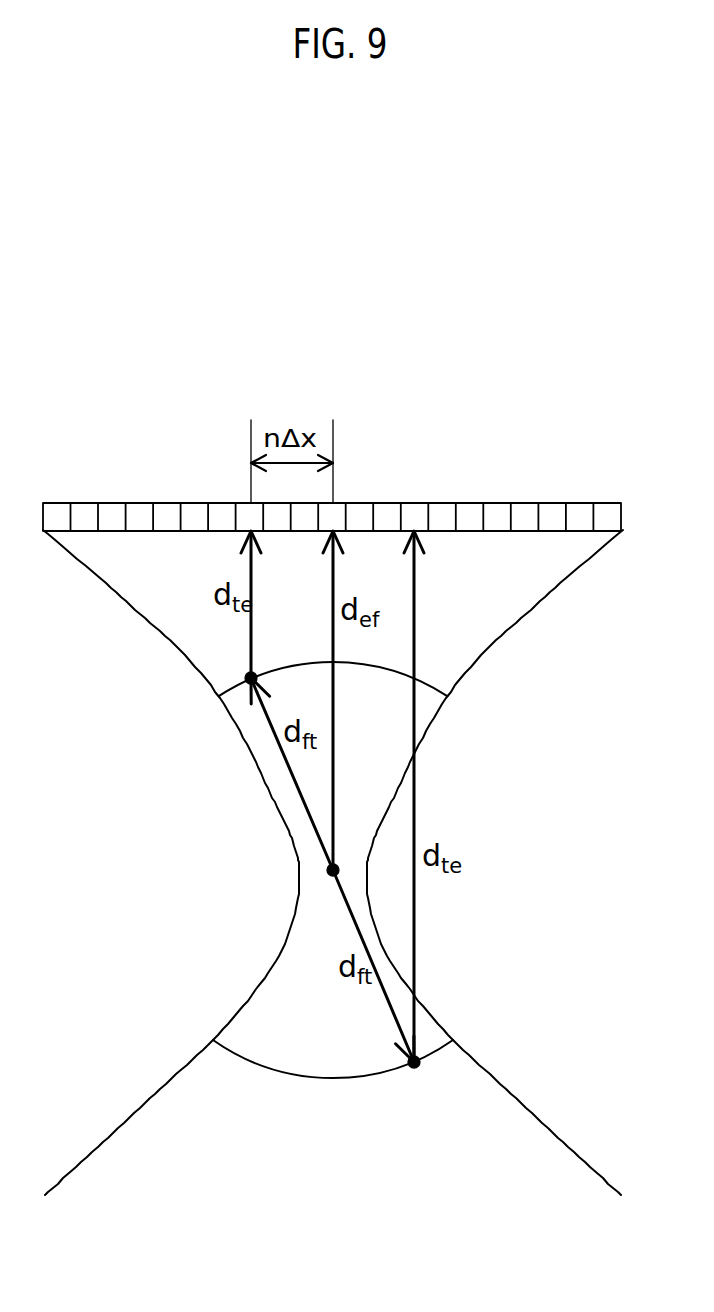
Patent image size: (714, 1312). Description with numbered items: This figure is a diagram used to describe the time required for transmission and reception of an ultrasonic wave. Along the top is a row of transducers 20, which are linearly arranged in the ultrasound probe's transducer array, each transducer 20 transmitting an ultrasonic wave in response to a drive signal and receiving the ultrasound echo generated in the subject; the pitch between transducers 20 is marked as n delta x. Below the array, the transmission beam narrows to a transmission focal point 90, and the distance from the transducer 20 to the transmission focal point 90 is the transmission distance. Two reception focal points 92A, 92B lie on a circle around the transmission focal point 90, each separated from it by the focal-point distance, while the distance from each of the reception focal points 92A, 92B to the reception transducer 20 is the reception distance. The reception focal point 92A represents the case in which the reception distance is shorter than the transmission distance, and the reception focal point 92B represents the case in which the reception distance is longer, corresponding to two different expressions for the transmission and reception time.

The transducer 20 is at (523, 513).
The transmission focal point 90 is at (331, 869).
The reception focal point 92A is at (248, 677).
The reception focal point 92B is at (413, 1066).